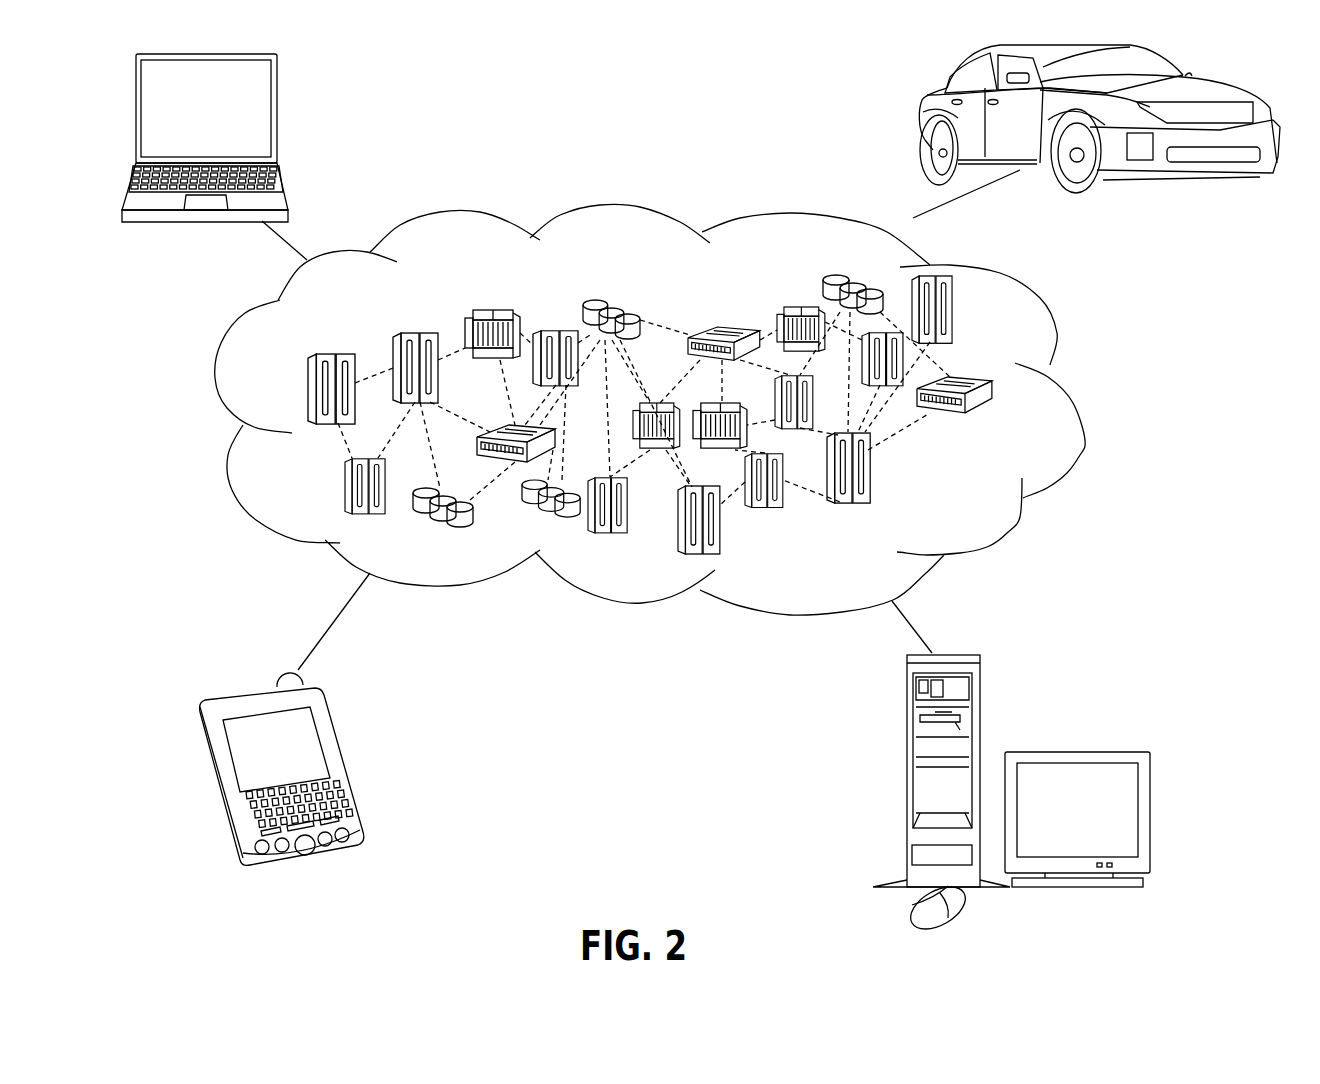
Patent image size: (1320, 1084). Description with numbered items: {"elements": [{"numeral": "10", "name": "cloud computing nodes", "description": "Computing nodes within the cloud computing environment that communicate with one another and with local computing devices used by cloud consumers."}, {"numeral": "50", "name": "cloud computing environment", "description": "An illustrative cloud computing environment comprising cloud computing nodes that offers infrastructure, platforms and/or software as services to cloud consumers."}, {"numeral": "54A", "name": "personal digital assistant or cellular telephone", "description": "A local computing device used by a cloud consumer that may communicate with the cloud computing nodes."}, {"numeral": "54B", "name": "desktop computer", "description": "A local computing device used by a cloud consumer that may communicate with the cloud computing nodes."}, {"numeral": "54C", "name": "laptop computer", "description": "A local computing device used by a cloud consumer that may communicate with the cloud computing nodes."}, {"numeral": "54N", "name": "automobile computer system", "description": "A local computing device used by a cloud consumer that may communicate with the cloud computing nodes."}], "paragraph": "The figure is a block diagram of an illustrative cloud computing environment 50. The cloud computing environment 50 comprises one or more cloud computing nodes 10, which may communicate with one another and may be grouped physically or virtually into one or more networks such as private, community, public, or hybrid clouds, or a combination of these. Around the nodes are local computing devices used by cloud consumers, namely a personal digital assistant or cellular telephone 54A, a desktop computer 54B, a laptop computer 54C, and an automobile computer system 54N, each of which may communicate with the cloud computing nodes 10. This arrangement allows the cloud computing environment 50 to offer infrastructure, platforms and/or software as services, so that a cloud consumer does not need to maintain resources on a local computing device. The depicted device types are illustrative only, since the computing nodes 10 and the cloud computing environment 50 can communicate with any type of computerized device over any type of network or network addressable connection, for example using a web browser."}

The cloud computing environment 10 is at (985, 507).
The cloud computing nodes network 50 is at (1072, 402).
The personal digital assistant or cellular telephone 54A is at (332, 732).
The desktop computer 54B is at (905, 717).
The laptop computer 54C is at (277, 93).
The automobile computer system 54N is at (920, 112).